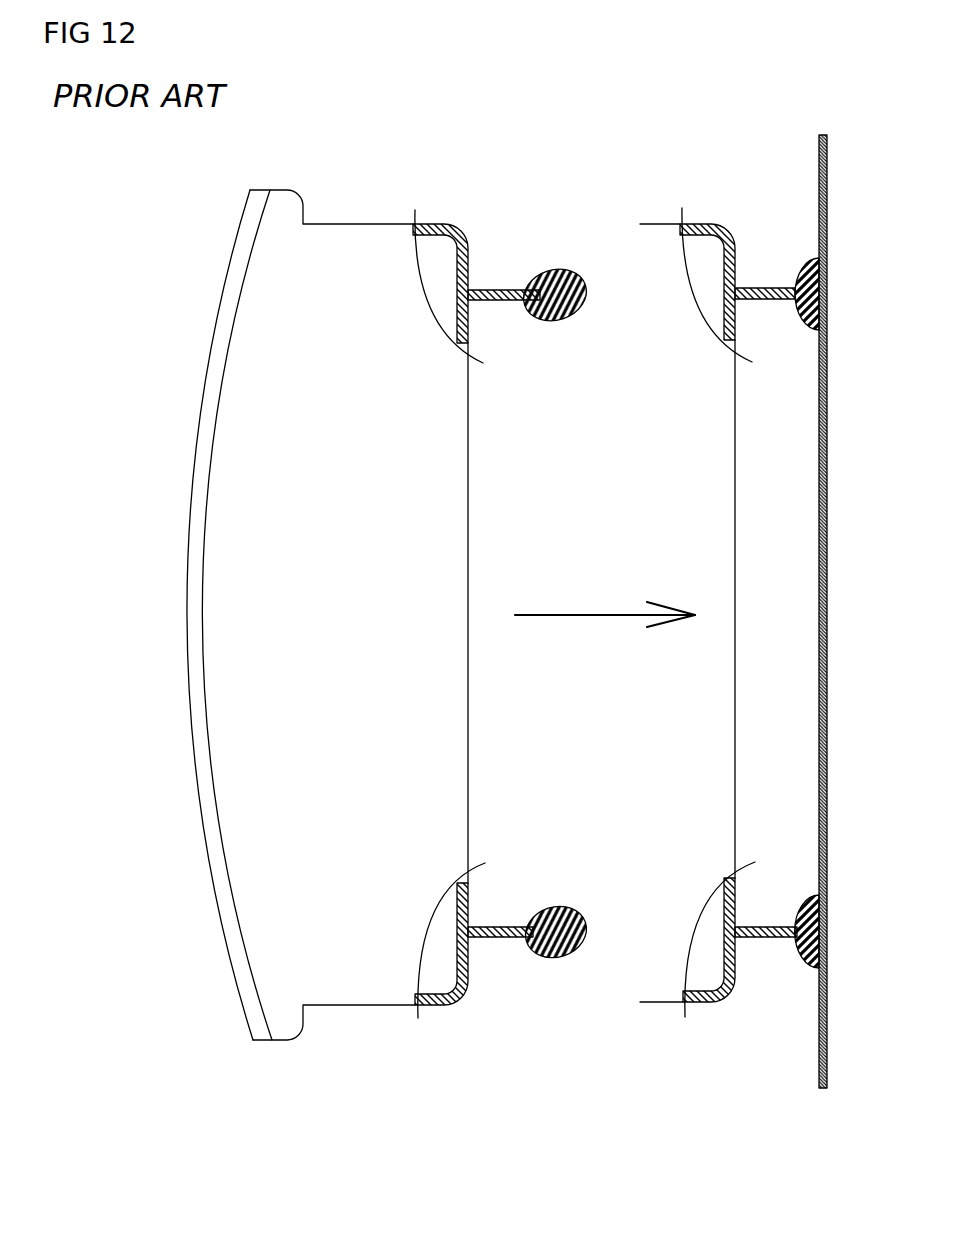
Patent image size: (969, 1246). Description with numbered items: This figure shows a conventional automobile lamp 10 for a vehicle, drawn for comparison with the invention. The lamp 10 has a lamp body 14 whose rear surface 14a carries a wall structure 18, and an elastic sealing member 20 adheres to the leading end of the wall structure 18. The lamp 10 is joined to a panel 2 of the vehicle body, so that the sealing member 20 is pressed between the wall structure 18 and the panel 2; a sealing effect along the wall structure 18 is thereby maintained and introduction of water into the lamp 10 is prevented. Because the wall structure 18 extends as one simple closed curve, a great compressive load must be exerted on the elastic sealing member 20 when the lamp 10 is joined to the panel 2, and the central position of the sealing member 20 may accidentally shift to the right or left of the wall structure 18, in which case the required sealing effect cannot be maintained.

The lamp 10 is at (205, 264).
The lamp body 14 is at (352, 225).
The rear surface 14a is at (468, 555).
The wall structure 18 is at (500, 278).
The elastic sealing member 20 is at (563, 326).
The panel 2 is at (826, 598).